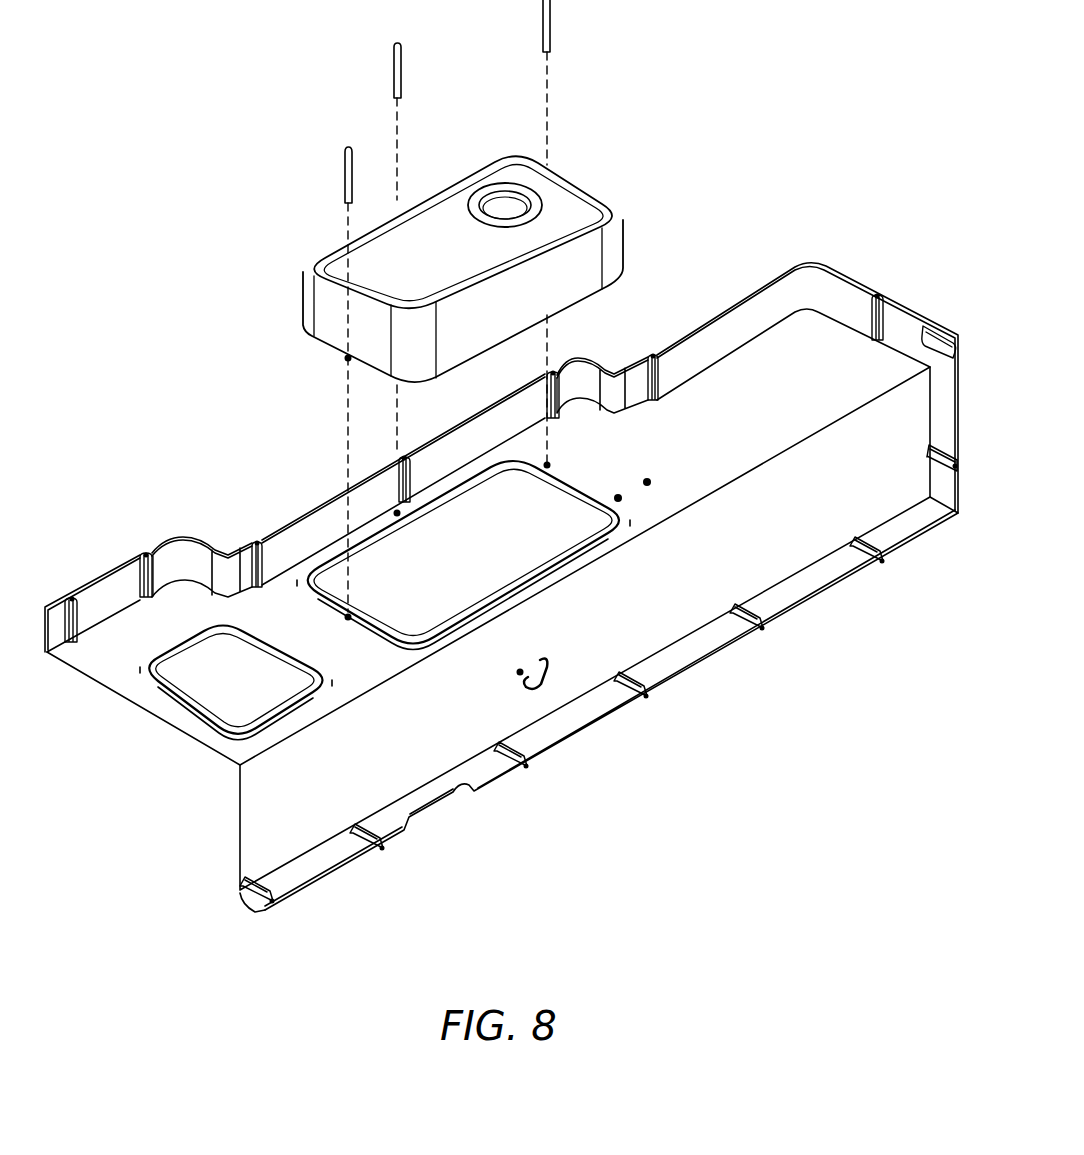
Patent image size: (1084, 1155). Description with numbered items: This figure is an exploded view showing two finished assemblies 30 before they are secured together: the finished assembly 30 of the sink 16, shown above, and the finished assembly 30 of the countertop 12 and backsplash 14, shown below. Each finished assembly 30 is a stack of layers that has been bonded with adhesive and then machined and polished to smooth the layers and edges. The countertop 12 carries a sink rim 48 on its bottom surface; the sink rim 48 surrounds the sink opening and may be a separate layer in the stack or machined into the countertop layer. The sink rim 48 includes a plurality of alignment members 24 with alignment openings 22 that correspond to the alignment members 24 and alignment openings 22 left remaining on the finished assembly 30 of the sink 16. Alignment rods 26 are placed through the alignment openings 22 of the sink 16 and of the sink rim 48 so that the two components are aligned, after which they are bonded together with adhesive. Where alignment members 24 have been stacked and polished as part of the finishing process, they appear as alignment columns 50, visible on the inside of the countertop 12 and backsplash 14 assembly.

The countertop 12 is at (762, 355).
The backsplash 14 is at (770, 563).
The sink 16 is at (577, 193).
The alignment openings 22 is at (876, 293).
The alignment members 24 is at (338, 359).
The alignment rods 26 is at (397, 52).
The finished assembly 30 is at (476, 121).
The sink rim 48 is at (536, 581).
The alignment columns 50 is at (672, 368).